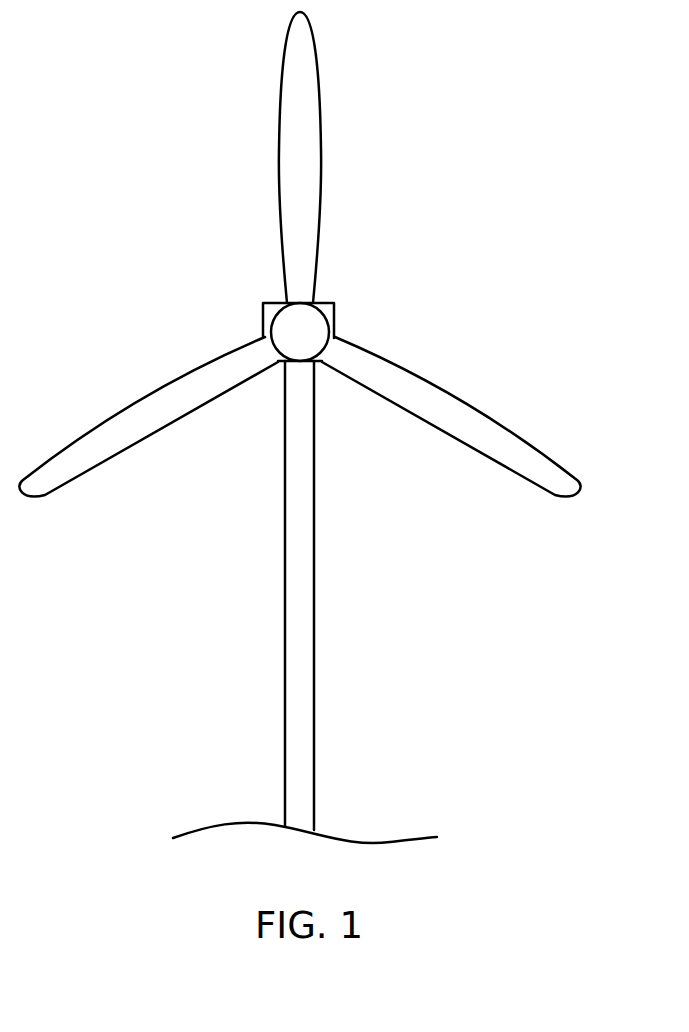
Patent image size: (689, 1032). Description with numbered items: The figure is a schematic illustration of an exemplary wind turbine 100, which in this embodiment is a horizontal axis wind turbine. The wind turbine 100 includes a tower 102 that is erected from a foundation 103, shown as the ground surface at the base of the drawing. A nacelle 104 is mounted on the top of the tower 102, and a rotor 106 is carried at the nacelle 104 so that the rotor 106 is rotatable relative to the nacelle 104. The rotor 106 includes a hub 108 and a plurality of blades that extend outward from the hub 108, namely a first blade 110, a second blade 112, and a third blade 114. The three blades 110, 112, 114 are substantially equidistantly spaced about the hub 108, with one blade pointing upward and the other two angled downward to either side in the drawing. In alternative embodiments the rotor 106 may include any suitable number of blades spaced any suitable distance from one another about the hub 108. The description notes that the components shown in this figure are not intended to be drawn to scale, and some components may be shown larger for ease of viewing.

The wind turbine 100 is at (149, 77).
The tower 102 is at (315, 647).
The foundation 103 is at (360, 838).
The nacelle 104 is at (335, 303).
The rotor 106 is at (333, 139).
The hub 108 is at (272, 322).
The first blade 110 is at (143, 447).
The second blade 112 is at (277, 175).
The third blade 114 is at (450, 395).